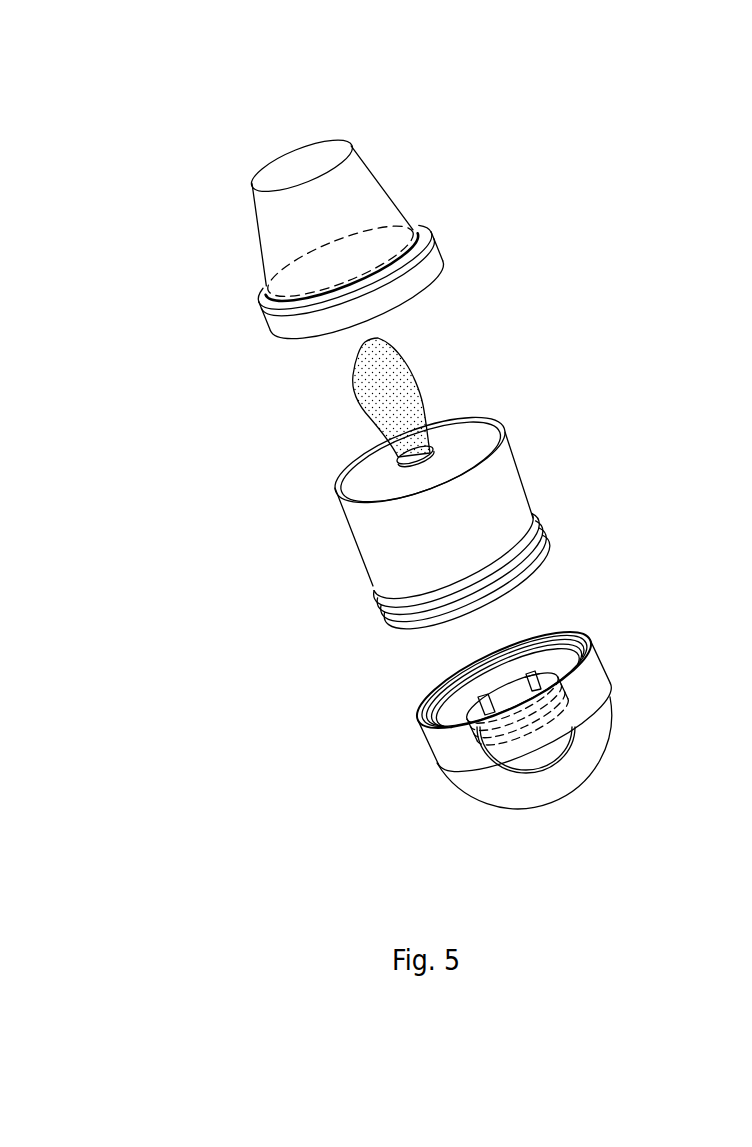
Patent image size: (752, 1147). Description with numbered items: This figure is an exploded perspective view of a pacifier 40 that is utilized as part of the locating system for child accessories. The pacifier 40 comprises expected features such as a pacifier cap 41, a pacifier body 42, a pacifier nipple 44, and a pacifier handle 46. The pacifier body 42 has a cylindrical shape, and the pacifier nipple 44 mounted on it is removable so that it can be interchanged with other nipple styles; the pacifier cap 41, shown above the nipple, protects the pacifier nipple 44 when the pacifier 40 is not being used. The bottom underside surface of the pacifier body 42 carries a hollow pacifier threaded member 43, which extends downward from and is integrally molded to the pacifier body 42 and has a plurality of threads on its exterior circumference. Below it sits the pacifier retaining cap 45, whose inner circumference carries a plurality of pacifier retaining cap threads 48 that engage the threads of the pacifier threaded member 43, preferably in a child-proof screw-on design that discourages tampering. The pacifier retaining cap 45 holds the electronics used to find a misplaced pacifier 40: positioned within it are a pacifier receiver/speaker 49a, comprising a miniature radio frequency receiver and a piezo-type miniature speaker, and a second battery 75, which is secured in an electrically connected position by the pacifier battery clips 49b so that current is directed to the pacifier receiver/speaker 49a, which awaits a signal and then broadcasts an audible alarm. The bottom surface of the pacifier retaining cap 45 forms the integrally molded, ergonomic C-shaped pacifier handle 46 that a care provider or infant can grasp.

The pacifier 40 is at (156, 90).
The pacifier cap 41 is at (358, 185).
The pacifier body 42 is at (475, 432).
The pacifier threaded member 43 is at (392, 593).
The pacifier nipple 44 is at (398, 380).
The pacifier retaining cap 45 is at (592, 672).
The pacifier handle 46 is at (513, 800).
The pacifier retaining cap threads 48 is at (433, 713).
The pacifier receiver/speaker 49a is at (567, 705).
The pacifier battery clips 49b is at (529, 674).
The second battery 75 is at (548, 682).